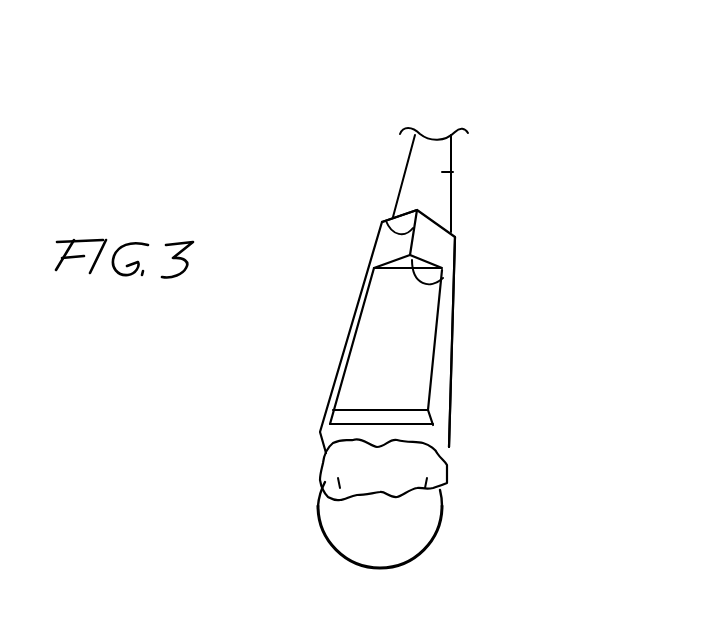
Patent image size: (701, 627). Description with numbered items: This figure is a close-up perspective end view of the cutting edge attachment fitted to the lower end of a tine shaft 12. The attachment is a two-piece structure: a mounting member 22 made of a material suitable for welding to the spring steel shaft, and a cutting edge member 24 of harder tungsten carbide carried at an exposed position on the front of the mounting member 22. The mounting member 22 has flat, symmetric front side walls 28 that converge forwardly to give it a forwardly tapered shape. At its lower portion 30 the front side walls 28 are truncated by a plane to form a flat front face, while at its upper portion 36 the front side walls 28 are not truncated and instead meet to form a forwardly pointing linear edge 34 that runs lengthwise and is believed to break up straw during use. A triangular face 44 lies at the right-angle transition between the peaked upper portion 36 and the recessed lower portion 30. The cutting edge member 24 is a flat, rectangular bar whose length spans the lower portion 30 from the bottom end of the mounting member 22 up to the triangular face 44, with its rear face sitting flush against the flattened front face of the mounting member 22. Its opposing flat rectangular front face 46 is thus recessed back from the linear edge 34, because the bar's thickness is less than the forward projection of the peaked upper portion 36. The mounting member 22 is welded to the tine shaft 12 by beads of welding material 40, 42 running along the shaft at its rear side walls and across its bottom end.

The tine shaft 12 is at (456, 171).
The mounting member 22 is at (357, 283).
The cutting edge member 24 is at (366, 347).
The front side walls 28 is at (388, 245).
The lower portion 30 is at (448, 417).
The linear edge 34 is at (389, 217).
The upper portion 36 is at (444, 232).
The bead of welding material 40 is at (447, 468).
The bead of welding material 42 is at (318, 487).
The triangular face 44 is at (447, 283).
The flat rectangular front face 46 is at (420, 360).